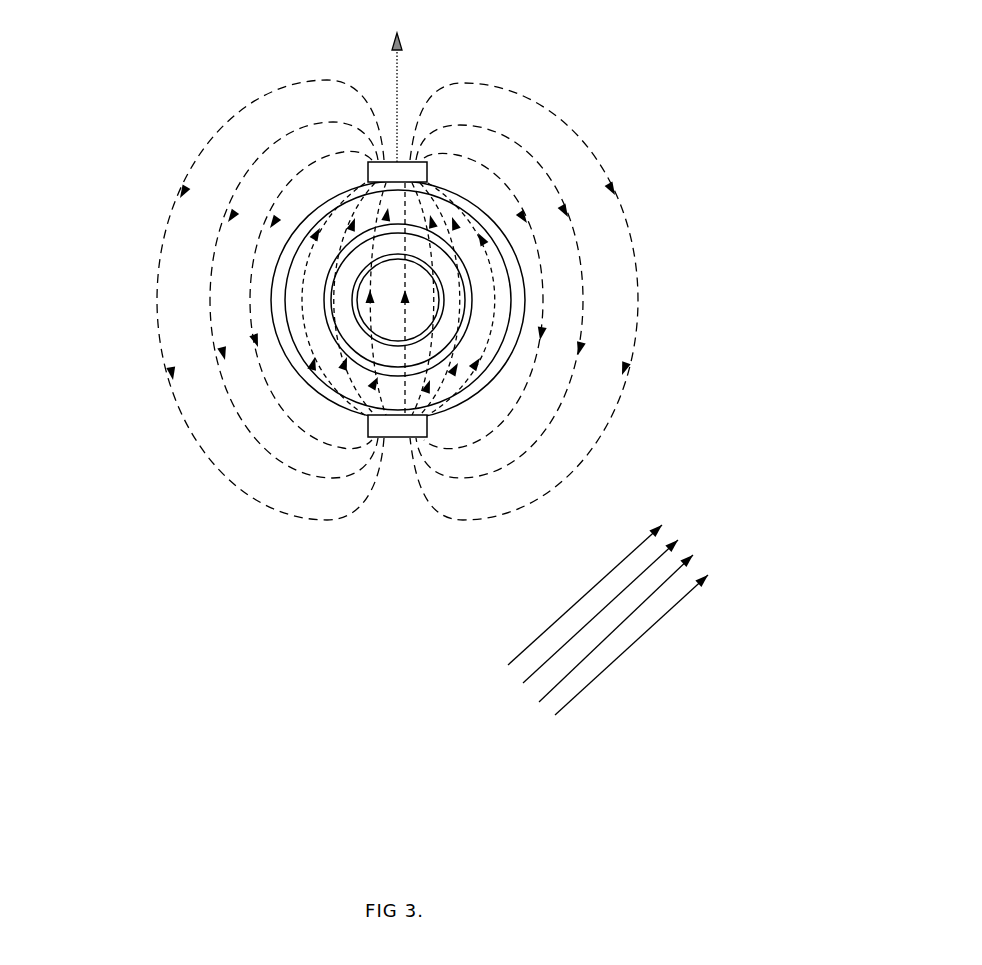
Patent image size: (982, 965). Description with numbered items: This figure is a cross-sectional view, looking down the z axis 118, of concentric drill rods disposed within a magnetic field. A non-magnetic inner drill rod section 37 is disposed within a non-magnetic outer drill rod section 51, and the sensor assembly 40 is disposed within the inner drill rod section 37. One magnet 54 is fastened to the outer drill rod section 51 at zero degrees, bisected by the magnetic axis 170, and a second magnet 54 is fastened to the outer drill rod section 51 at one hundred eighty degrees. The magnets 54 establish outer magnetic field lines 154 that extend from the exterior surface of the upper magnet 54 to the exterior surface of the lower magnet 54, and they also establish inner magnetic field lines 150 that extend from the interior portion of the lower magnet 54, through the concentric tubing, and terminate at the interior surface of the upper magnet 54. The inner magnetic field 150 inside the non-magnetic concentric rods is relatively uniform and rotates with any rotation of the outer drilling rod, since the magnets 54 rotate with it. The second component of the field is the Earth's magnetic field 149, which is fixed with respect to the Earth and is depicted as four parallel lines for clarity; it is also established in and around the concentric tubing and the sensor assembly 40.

The outer magnetic field lines 154 is at (197, 145).
The magnetic axis 170 is at (420, 82).
The magnet 54 is at (422, 414).
The non-magnetic outer drill rod section 51 is at (268, 317).
The non-magnetic inner drill rod section 37 is at (325, 323).
The sensor assembly 40 is at (356, 330).
The inner magnetic field lines 150 is at (364, 292).
The z axis 118 is at (288, 658).
The Earth's magnetic field 149 is at (757, 665).